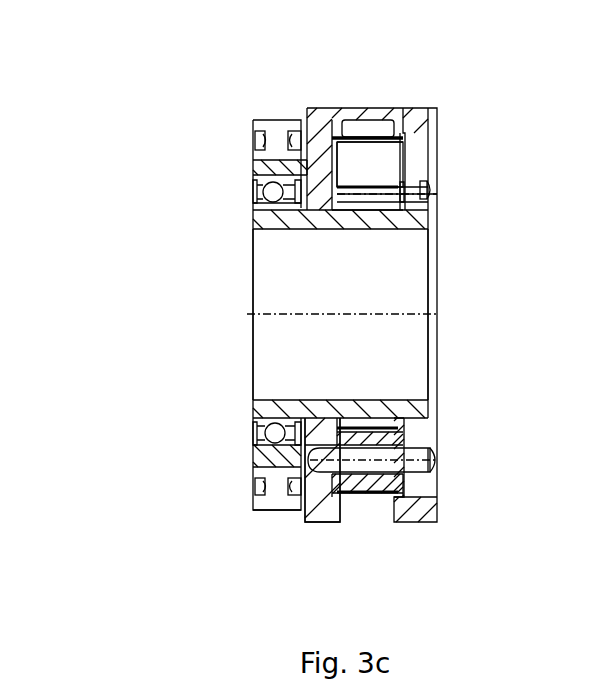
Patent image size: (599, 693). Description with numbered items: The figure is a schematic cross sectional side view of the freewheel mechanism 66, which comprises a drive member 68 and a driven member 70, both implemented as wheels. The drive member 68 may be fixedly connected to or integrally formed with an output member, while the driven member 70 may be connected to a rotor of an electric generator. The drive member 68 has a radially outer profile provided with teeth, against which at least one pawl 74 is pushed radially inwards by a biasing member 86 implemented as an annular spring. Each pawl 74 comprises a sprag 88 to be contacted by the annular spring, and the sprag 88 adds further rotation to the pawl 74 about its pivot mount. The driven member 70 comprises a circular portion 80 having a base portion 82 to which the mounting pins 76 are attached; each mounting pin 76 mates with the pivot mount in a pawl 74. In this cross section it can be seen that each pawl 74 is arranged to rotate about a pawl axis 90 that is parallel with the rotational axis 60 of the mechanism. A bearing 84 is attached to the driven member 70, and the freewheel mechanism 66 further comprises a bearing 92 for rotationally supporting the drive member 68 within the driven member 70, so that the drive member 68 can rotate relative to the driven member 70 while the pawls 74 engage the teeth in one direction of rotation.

The freewheel mechanism 66 is at (117, 81).
The drive member 68 is at (412, 220).
The rotational axis 60 is at (247, 314).
The driven member 70 is at (372, 110).
The pawl 74 is at (378, 157).
The mounting pin 76 is at (417, 188).
The circular portion 80 is at (323, 510).
The base portion 82 is at (268, 456).
The bearing 84 is at (270, 489).
The biasing member 86 is at (365, 138).
The sprag 88 is at (380, 145).
The pawl axis 90 is at (422, 193).
The bearing 92 is at (268, 430).